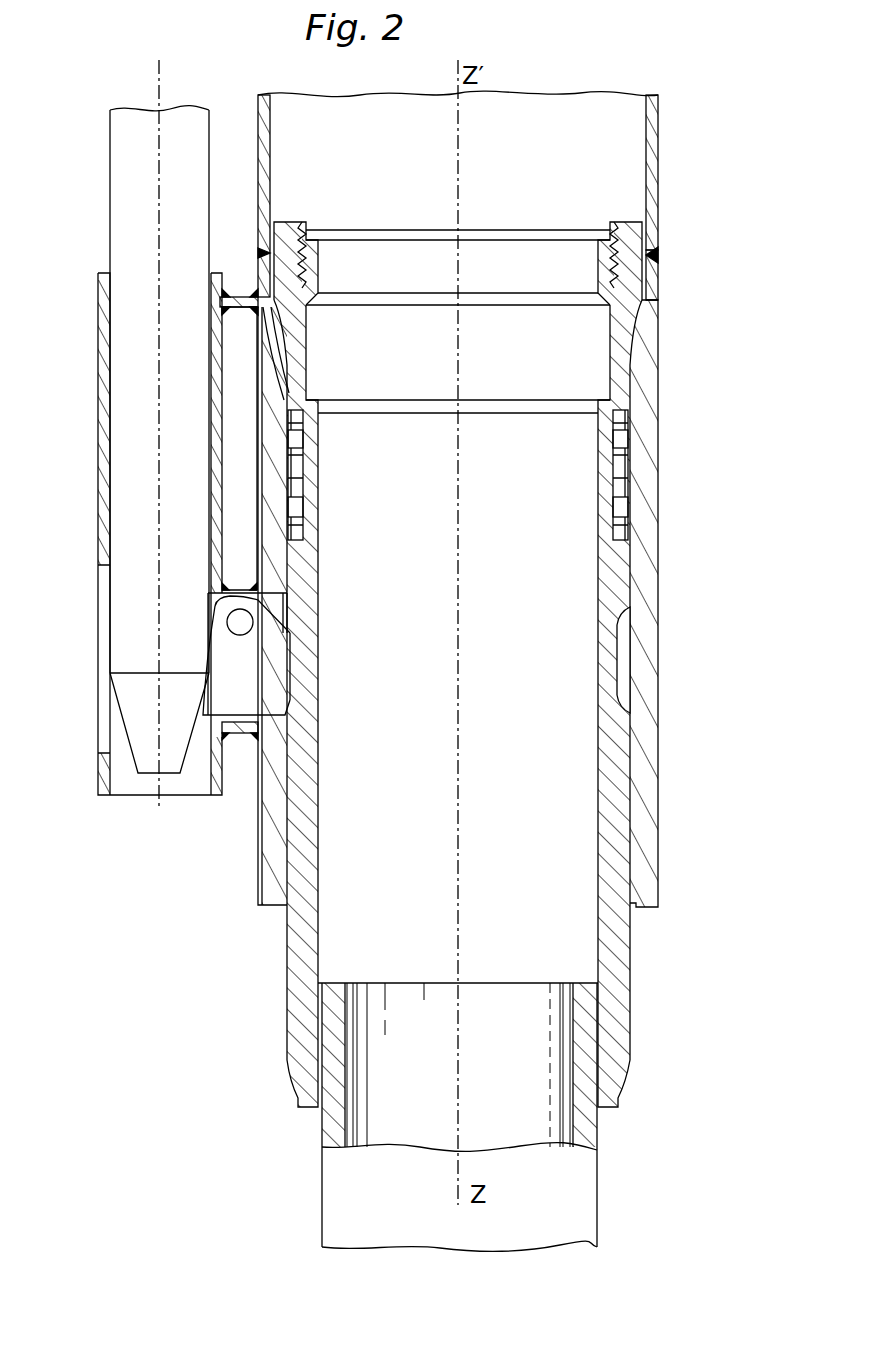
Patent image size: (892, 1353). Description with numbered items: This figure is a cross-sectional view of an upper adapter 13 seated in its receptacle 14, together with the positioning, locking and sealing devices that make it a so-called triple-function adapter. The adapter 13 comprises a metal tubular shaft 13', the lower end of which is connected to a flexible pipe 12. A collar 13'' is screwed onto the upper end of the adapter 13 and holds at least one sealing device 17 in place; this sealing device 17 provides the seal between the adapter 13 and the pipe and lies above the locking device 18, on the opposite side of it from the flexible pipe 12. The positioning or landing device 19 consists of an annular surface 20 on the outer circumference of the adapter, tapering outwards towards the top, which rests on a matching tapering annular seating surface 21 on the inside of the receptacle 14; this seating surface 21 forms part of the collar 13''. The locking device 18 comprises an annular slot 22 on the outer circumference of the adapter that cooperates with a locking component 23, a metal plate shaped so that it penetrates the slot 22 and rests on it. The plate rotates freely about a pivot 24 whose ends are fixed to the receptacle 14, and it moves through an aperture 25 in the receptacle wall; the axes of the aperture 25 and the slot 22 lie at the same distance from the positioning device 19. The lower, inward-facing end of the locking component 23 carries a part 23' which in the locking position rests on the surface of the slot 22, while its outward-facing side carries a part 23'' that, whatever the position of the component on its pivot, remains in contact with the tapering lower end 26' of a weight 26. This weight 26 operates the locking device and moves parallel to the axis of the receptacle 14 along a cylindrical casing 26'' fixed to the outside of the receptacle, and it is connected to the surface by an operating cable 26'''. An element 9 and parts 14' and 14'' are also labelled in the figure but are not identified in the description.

The outer tube 9 is at (660, 137).
The flexible pipe 12 is at (322, 1163).
The upper adapter 13 is at (500, 664).
The metal tubular shaft 13' is at (508, 959).
The collar 13'' is at (502, 252).
The receptacle 14 is at (500, 607).
The upper portion of connecting piece 14' is at (687, 275).
The intermediate portion of connecting piece 14'' is at (686, 355).
The sealing device 17 is at (622, 482).
The locking device 18 is at (187, 638).
The positioning device 19 is at (679, 323).
The annular surface 20 is at (264, 340).
The tapering annular seating surface 21 is at (284, 357).
The annular slot 22 is at (623, 675).
The locking component 23 is at (167, 660).
The part of locking component 23' is at (332, 682).
The part of locking component 23'' is at (229, 771).
The pivot 24 is at (232, 617).
The aperture 25 is at (273, 578).
The weight 26 is at (128, 389).
The tapering lower end 26' is at (127, 723).
The cylindrical casing 26'' is at (133, 534).
The operating cable 26''' is at (112, 435).